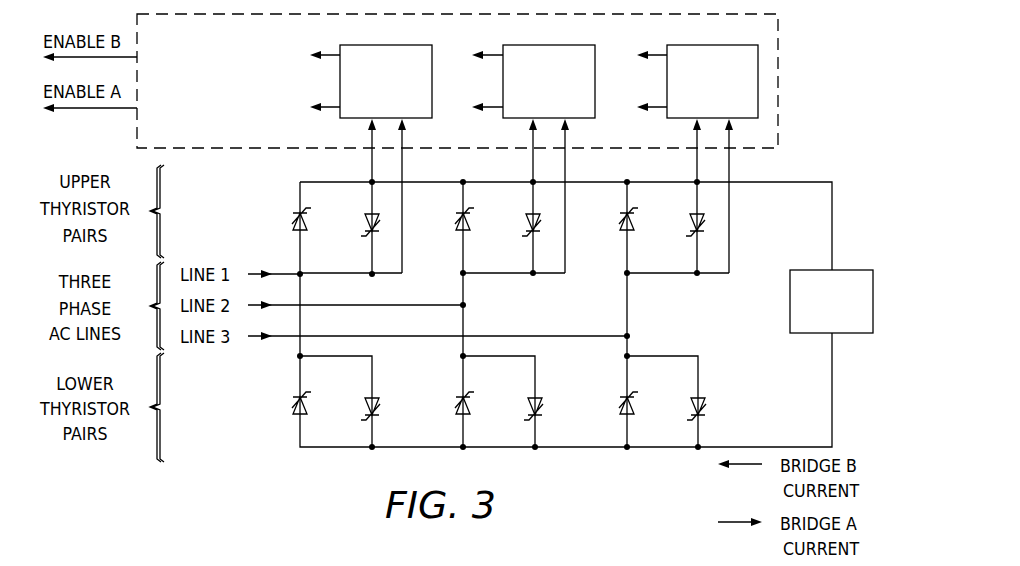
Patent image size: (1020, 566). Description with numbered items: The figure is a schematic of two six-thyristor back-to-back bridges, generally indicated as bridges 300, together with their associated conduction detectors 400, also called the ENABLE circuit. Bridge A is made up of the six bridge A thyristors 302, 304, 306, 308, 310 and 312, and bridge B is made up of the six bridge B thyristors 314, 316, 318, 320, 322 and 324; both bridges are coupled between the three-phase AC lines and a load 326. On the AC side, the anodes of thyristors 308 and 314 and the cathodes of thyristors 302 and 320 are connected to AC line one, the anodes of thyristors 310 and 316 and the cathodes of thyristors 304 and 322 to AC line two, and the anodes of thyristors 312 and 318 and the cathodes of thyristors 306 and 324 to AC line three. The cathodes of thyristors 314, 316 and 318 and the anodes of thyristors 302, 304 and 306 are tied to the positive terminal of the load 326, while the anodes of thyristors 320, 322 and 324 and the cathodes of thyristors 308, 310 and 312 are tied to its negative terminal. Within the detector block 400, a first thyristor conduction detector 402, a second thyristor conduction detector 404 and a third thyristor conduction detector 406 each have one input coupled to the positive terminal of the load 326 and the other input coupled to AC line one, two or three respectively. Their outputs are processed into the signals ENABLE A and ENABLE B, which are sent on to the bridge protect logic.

The back-to-back thyristor bridges 300 is at (260, 457).
The thyristor A1 302 is at (362, 236).
The thyristor A2 304 is at (523, 236).
The thyristor A3 306 is at (687, 236).
The thyristor A4 308 is at (381, 402).
The thyristor A5 310 is at (543, 402).
The thyristor A6 312 is at (706, 402).
The thyristor B1 314 is at (296, 221).
The thyristor B2 316 is at (456, 220).
The thyristor B3 318 is at (620, 220).
The thyristor B4 320 is at (292, 403).
The thyristor B5 322 is at (469, 401).
The thyristor B6 324 is at (633, 400).
The load 326 is at (790, 300).
The conduction detectors 400 is at (812, 63).
The first thyristor conduction detector 402 is at (433, 52).
The second thyristor conduction detector 404 is at (595, 52).
The third thyristor conduction detector 406 is at (667, 112).